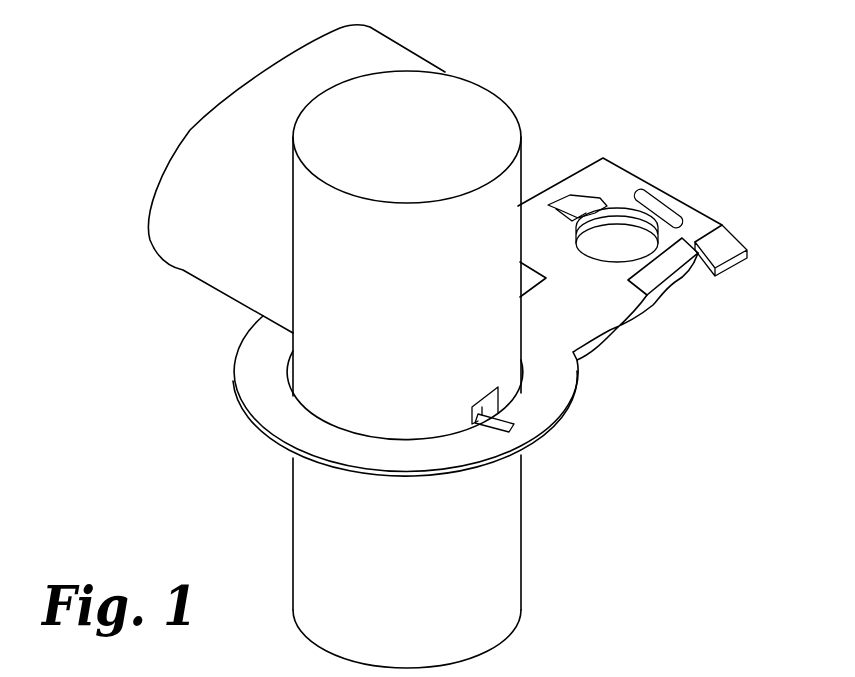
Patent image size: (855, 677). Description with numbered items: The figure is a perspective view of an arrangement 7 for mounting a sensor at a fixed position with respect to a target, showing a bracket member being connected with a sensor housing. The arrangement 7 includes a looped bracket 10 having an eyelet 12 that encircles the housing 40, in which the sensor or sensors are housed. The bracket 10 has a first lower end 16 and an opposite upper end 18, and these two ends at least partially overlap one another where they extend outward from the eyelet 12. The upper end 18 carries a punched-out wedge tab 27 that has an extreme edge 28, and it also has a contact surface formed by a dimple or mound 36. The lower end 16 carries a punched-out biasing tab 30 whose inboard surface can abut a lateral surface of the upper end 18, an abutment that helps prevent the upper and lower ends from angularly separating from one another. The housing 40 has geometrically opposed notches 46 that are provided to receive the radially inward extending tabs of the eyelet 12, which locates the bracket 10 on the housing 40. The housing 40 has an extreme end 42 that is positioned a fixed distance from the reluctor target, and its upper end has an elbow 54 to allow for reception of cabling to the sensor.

The arrangement 7 is at (531, 107).
The bracket 10 is at (546, 404).
The eyelet 12 is at (255, 388).
The first lower end 16 is at (748, 250).
The upper end 18 is at (615, 166).
The wedge tab 27 is at (563, 204).
The extreme edge 28 is at (595, 205).
The biasing tab 30 is at (680, 290).
The mound 36 is at (662, 209).
The housing 40 is at (522, 522).
The extreme end 42 is at (498, 645).
The notches 46 is at (480, 407).
The elbow 54 is at (198, 282).